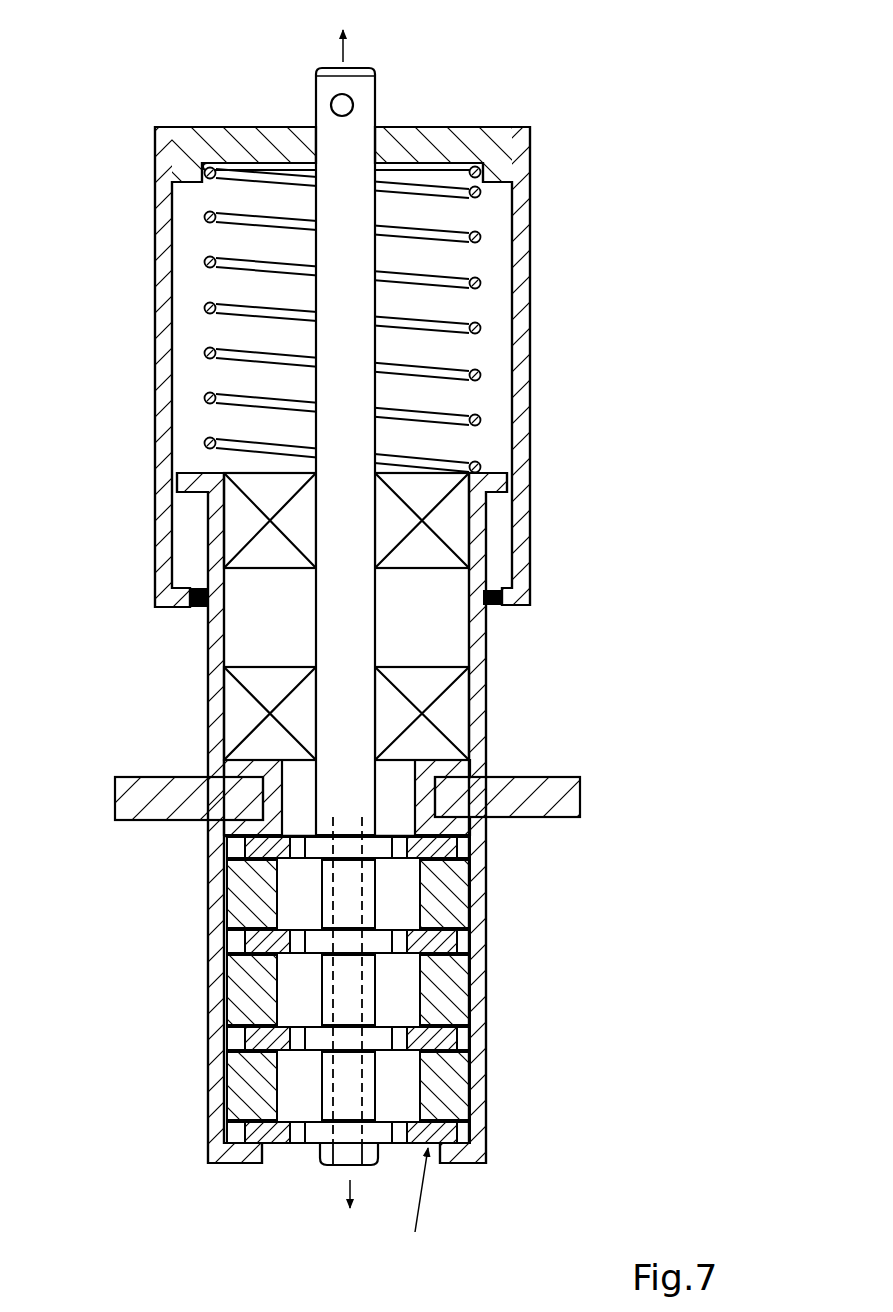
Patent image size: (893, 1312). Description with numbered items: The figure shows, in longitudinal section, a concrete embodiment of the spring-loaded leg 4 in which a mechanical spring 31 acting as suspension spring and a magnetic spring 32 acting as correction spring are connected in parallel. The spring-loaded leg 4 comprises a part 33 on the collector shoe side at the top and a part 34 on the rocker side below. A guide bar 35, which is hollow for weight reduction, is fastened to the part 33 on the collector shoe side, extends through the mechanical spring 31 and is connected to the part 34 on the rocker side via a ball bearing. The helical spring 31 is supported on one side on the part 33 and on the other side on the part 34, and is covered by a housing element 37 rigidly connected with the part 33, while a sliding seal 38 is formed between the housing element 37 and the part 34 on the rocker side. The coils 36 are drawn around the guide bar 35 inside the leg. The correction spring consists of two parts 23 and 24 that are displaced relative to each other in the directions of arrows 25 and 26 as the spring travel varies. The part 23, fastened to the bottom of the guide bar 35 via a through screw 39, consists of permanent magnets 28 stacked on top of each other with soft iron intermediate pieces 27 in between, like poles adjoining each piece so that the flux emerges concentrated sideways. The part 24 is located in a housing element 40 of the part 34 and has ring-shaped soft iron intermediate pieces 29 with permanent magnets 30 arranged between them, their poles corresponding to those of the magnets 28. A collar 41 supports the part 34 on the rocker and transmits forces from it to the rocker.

The spring-loaded leg 4 is at (645, 436).
The part of the correction spring 23 is at (384, 988).
The part of the correction spring 24 is at (424, 1208).
The arrow 25 is at (346, 53).
The arrow 26 is at (348, 1195).
The soft iron intermediate piece 27 is at (382, 942).
The permanent magnet 28 is at (337, 893).
The ring-shaped soft iron intermediate piece 29 is at (468, 1052).
The permanent magnet 30 is at (462, 898).
The mechanical spring 31 is at (240, 267).
The magnetic spring 32 is at (233, 1105).
The part on the collector shoe side 33 is at (363, 100).
The part on the rocker side 34 is at (533, 790).
The guide bar 35 is at (357, 256).
The solenoid coil 36 is at (233, 538).
The housing element 37 is at (522, 312).
The sliding seal 38 is at (190, 597).
The through screw 39 is at (327, 1160).
The housing element 40 is at (483, 1045).
The collar 41 is at (162, 797).